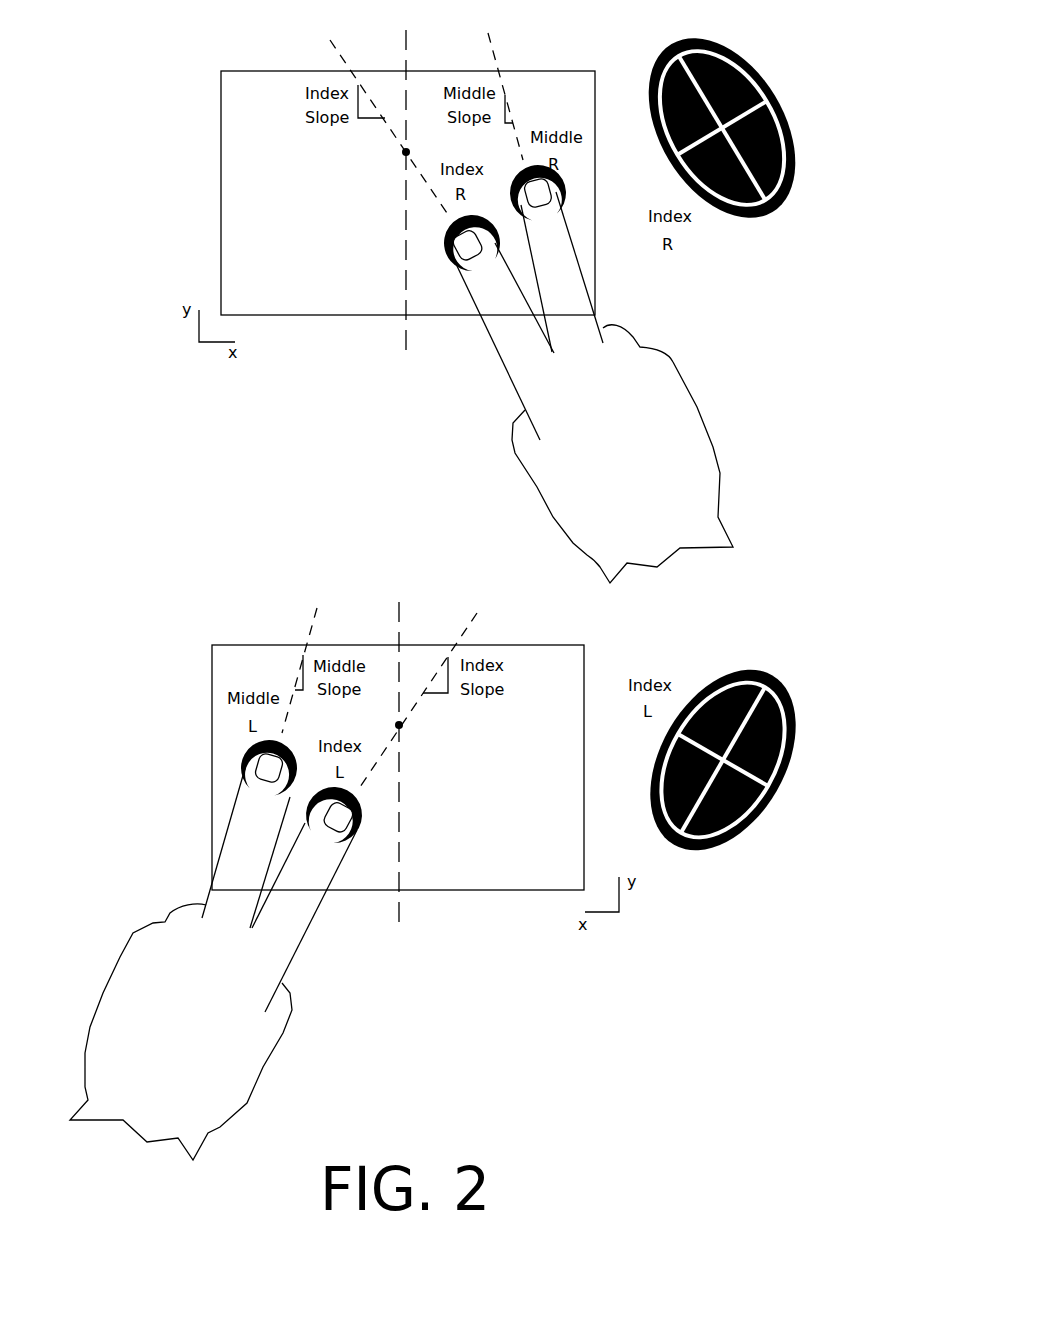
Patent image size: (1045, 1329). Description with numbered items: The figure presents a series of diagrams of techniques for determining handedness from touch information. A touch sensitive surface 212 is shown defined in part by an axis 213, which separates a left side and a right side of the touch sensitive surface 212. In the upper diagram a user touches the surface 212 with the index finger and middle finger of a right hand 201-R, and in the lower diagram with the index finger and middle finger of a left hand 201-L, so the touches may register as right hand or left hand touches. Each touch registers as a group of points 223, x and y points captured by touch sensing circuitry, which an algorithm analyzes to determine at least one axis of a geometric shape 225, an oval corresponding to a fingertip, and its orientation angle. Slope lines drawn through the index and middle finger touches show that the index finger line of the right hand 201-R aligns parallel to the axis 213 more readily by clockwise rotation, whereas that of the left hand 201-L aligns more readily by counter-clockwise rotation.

The touch sensitive surface 212 is at (258, 71).
The axis 213 is at (403, 277).
The right hand 201-R is at (686, 373).
The left hand 201-L is at (130, 937).
The group of points 223 is at (703, 42).
The geometric shape 225 is at (735, 67).